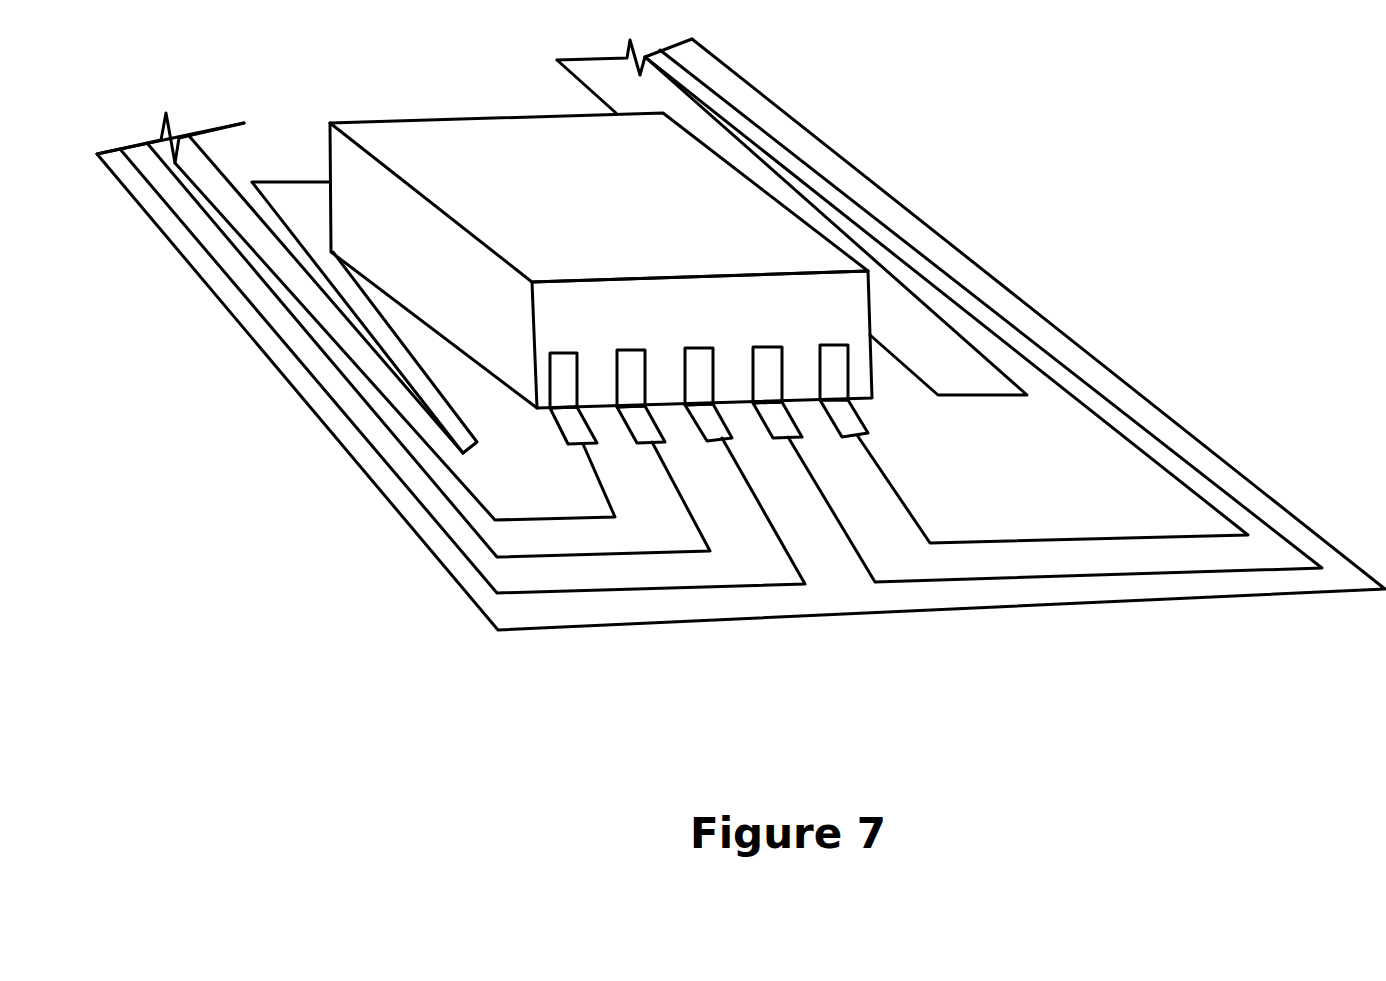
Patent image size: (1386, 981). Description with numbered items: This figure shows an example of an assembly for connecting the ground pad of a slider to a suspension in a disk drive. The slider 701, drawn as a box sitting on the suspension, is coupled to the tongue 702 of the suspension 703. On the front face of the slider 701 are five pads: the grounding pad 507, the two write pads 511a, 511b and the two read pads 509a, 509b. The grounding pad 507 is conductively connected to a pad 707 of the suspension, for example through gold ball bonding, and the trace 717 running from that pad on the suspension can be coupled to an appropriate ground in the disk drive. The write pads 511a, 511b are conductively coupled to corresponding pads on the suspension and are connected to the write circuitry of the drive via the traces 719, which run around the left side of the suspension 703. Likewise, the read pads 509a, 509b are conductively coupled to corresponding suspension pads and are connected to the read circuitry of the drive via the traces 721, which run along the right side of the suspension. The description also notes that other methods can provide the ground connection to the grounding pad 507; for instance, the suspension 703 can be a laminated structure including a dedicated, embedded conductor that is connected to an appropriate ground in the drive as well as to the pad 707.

The slider 701 is at (457, 140).
The tongue 702 is at (287, 196).
The suspension 703 is at (918, 596).
The grounding pad 507 is at (562, 353).
The write pad 511a is at (697, 348).
The write pad 511b is at (630, 350).
The read pad 509a is at (833, 345).
The read pad 509b is at (767, 347).
The pad 707 is at (558, 422).
The trace 717 is at (553, 520).
The traces 719 is at (668, 553).
The traces 721 is at (907, 243).